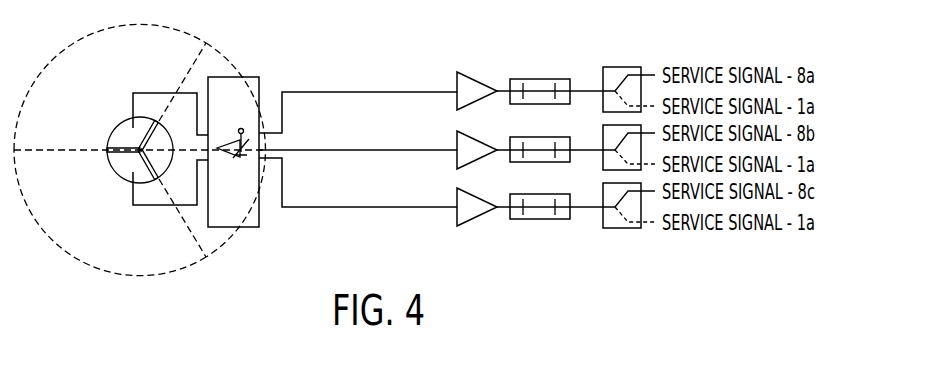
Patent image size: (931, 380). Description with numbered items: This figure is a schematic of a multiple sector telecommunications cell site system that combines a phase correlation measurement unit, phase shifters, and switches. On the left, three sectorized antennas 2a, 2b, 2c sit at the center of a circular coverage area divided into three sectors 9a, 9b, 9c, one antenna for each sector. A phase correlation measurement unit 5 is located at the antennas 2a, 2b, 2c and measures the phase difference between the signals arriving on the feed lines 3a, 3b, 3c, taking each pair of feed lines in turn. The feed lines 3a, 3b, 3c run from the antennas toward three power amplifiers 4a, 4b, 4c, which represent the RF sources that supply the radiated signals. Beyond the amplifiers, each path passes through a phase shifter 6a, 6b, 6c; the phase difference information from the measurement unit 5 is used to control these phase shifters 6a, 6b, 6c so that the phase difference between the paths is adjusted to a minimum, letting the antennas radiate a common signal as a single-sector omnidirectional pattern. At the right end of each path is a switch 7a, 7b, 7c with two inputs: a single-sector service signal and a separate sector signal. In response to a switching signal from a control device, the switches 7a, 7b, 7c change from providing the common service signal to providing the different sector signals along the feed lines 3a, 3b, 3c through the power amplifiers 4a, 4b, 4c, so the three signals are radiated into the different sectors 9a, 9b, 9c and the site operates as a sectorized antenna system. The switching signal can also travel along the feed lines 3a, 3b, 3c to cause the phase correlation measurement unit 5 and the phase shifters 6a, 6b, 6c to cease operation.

The sectorized antenna 2a is at (125, 132).
The sectorized antenna 2b is at (162, 138).
The sectorized antenna 2c is at (125, 168).
The feed line 3a is at (313, 91).
The feed line 3b is at (313, 149).
The feed line 3c is at (322, 206).
The power amplifier 4a is at (477, 83).
The power amplifier 4b is at (472, 138).
The power amplifier 4c is at (472, 197).
The phase correlation measurement unit 5 is at (228, 76).
The phase shifter 6a is at (555, 78).
The phase shifter 6b is at (562, 136).
The phase shifter 6c is at (562, 193).
The switch 7a is at (615, 67).
The switch 7b is at (605, 135).
The switch 7c is at (605, 193).
The sector 9a is at (123, 75).
The sector 9b is at (225, 238).
The sector 9c is at (95, 240).